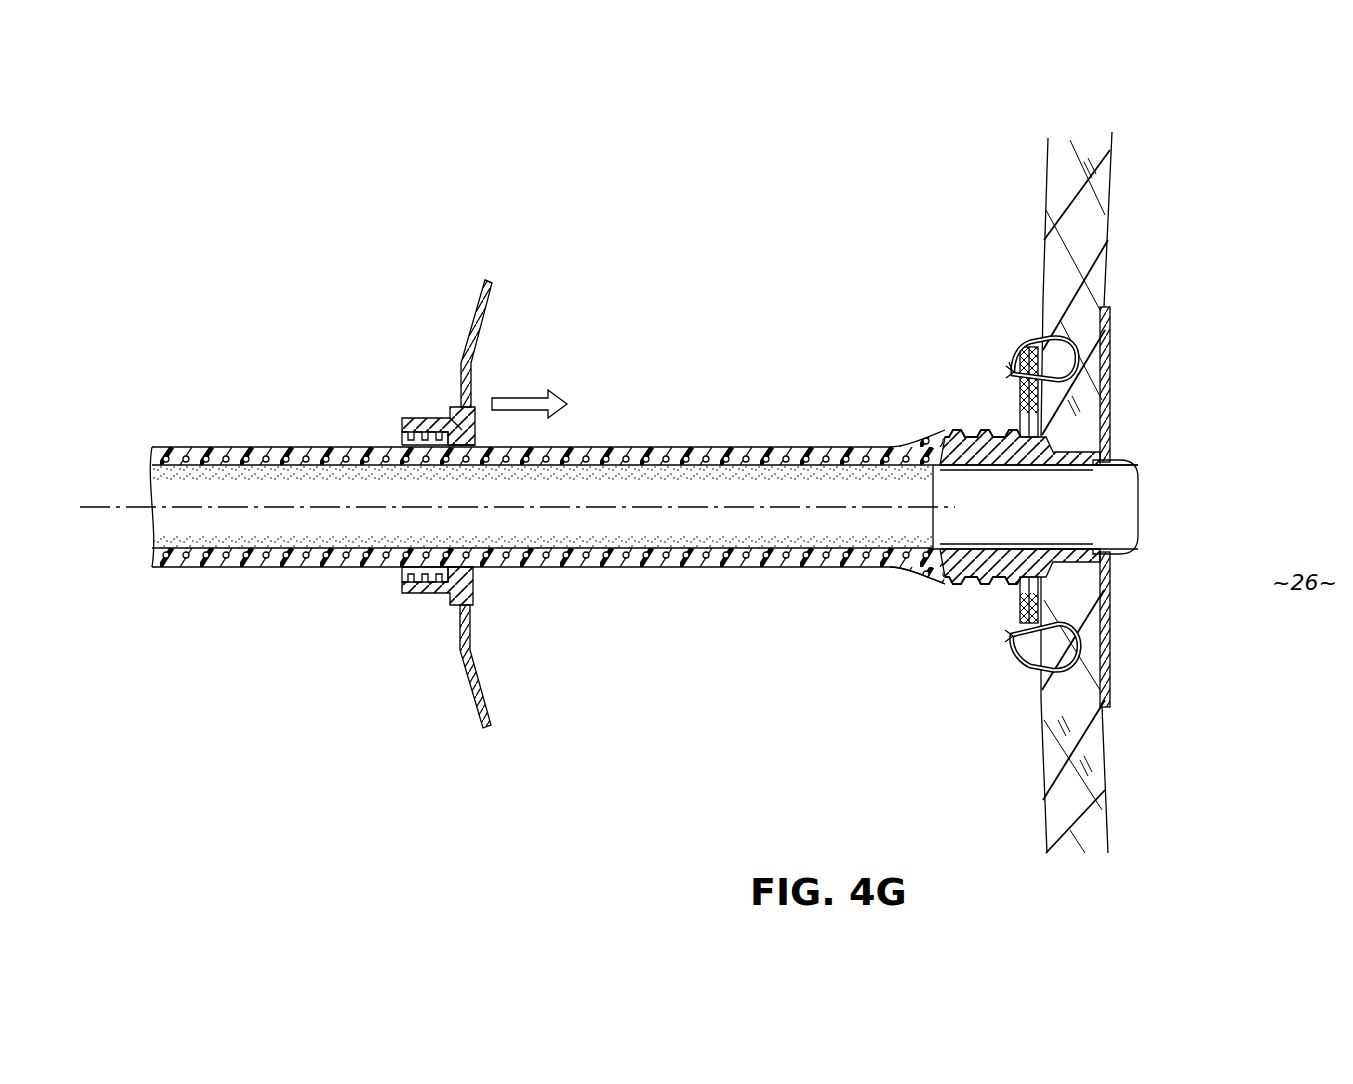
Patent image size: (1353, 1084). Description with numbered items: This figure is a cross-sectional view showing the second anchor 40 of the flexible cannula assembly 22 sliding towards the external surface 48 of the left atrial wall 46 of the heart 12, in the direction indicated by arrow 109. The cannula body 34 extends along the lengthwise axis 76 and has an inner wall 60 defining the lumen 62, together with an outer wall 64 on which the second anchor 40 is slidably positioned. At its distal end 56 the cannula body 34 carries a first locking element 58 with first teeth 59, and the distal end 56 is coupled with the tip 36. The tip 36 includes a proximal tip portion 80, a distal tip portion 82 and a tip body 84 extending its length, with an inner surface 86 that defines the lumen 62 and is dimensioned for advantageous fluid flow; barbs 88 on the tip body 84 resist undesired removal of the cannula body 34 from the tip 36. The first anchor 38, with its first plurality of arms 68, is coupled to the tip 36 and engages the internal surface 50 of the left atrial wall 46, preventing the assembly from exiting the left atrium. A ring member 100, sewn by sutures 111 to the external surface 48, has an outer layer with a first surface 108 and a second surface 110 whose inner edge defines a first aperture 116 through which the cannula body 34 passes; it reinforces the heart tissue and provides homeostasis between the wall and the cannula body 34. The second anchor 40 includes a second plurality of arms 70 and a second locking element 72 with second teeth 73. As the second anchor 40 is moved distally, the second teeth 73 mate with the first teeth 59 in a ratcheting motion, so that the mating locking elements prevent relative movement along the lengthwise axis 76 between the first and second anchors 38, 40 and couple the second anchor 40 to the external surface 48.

The heart 12 is at (1073, 478).
The flexible cannula assembly 22 is at (521, 487).
The cannula body 34 is at (335, 443).
The tip 36 is at (1074, 502).
The first anchor 38 is at (1134, 490).
The second anchor 40 is at (493, 280).
The left atrial wall 46 is at (1053, 207).
The external surface 48 is at (1042, 762).
The internal surface 50 is at (1108, 762).
The distal end 56 is at (935, 583).
The first locking element 58 is at (948, 433).
The first teeth 59 is at (985, 587).
The inner wall 60 is at (178, 470).
The lumen 62 is at (636, 515).
The outer wall 64 is at (655, 446).
The first plurality of arms 68 is at (1112, 351).
The second plurality of arms 70 is at (482, 318).
The second locking element 72 is at (411, 604).
The second teeth 73 is at (438, 585).
The lengthwise axis 76 is at (105, 512).
The proximal tip portion 80 is at (942, 471).
The distal tip portion 82 is at (1140, 505).
The tip body 84 is at (1035, 547).
The inner surface 86 is at (1098, 468).
The barbs 88 is at (1049, 598).
The ring member 100 is at (1009, 496).
The first surface 108 is at (1075, 643).
The arrow 109 is at (525, 398).
The second surface 110 is at (1018, 392).
The sutures 111 is at (1031, 345).
The first aperture 116 is at (1028, 425).